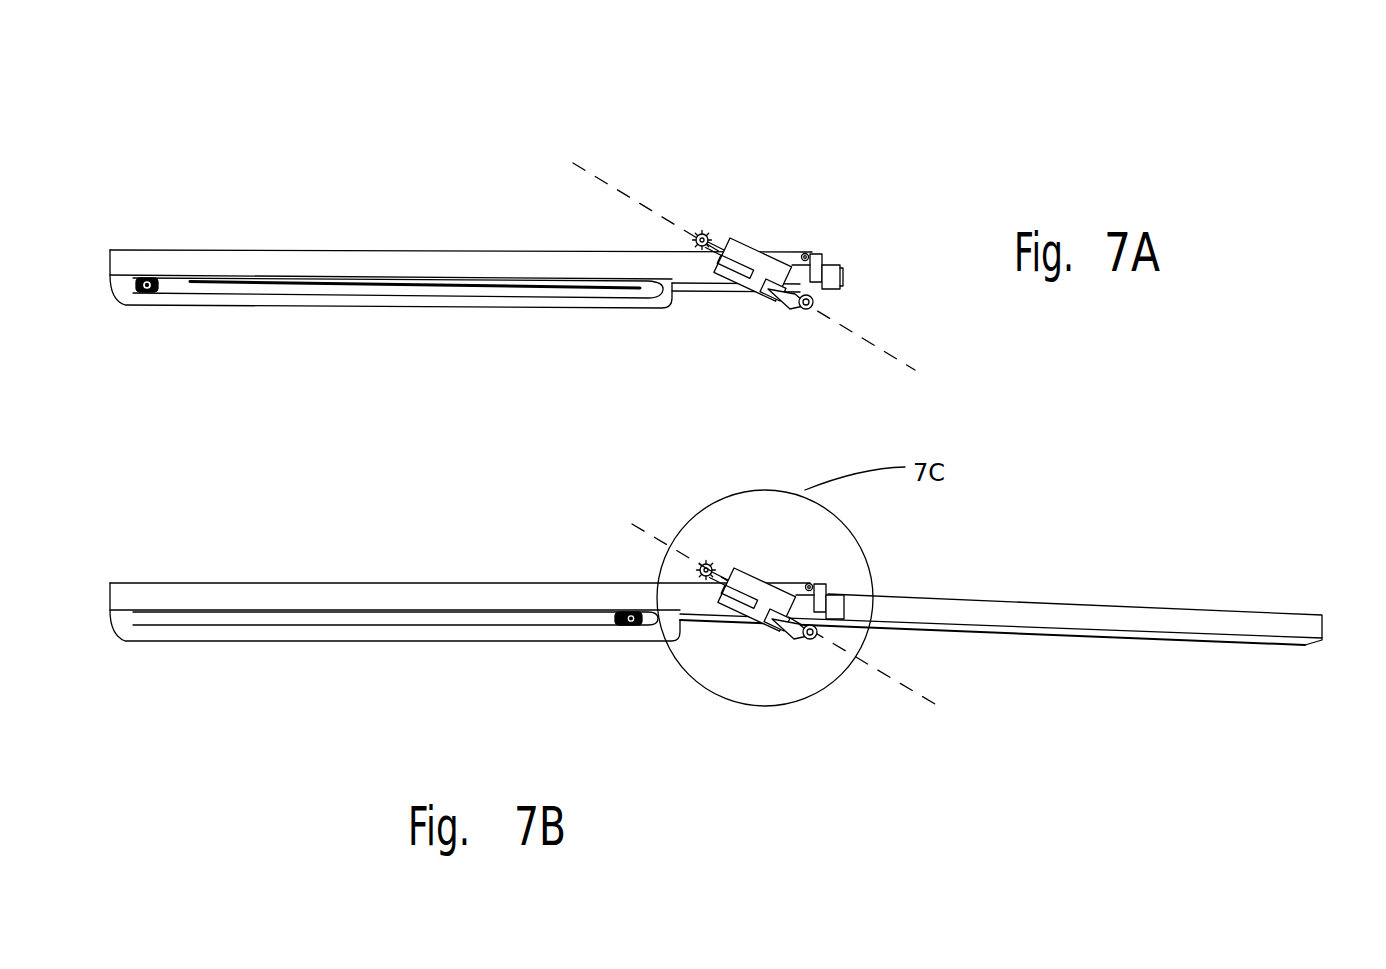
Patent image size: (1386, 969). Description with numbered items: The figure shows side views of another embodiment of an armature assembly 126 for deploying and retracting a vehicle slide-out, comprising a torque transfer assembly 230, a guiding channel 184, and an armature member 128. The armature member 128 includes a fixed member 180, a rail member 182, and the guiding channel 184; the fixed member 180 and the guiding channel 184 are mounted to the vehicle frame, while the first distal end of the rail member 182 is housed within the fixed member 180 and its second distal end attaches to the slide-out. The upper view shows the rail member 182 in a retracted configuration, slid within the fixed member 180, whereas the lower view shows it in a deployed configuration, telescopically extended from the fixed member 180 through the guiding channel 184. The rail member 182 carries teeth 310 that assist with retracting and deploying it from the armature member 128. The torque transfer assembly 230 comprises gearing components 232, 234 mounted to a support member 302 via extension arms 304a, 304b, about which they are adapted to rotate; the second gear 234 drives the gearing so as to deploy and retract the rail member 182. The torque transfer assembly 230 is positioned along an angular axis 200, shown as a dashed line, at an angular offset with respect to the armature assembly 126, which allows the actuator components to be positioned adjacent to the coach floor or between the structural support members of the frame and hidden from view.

In FIG. 7A, the armature assembly 126 is at (353, 222).
In FIG. 7B, the armature assembly 126 is at (390, 560).
In FIG. 7A, the armature member 128 is at (245, 258).
In FIG. 7B, the armature member 128 is at (255, 593).
In FIG. 7A, the fixed member 180 is at (432, 258).
In FIG. 7B, the fixed member 180 is at (430, 598).
In FIG. 7A, the rail member 182 is at (830, 252).
In FIG. 7B, the rail member 182 is at (1017, 612).
In FIG. 7A, the guiding channel 184 is at (787, 248).
In FIG. 7B, the guiding channel 184 is at (869, 569).
In FIG. 7A, the axis 200 is at (620, 190).
In FIG. 7B, the axis 200 is at (630, 525).
In FIG. 7A, the torque transfer assembly 230 is at (763, 215).
In FIG. 7B, the torque transfer assembly 230 is at (740, 490).
In FIG. 7A, the gearing component 232 is at (702, 233).
In FIG. 7B, the gearing component 232 is at (676, 506).
In FIG. 7A, the second gear 234 is at (808, 309).
In FIG. 7B, the second gear 234 is at (813, 687).
In FIG. 7A, the support member 302 is at (757, 283).
In FIG. 7B, the support member 302 is at (803, 565).
In FIG. 7A, the extension arm 304a is at (713, 267).
In FIG. 7B, the extension arm 304a is at (669, 658).
In FIG. 7A, the extension arm 304b is at (840, 290).
In FIG. 7B, the extension arm 304b is at (800, 717).
In FIG. 7A, the teeth 310 is at (500, 288).
In FIG. 7B, the teeth 310 is at (1112, 640).